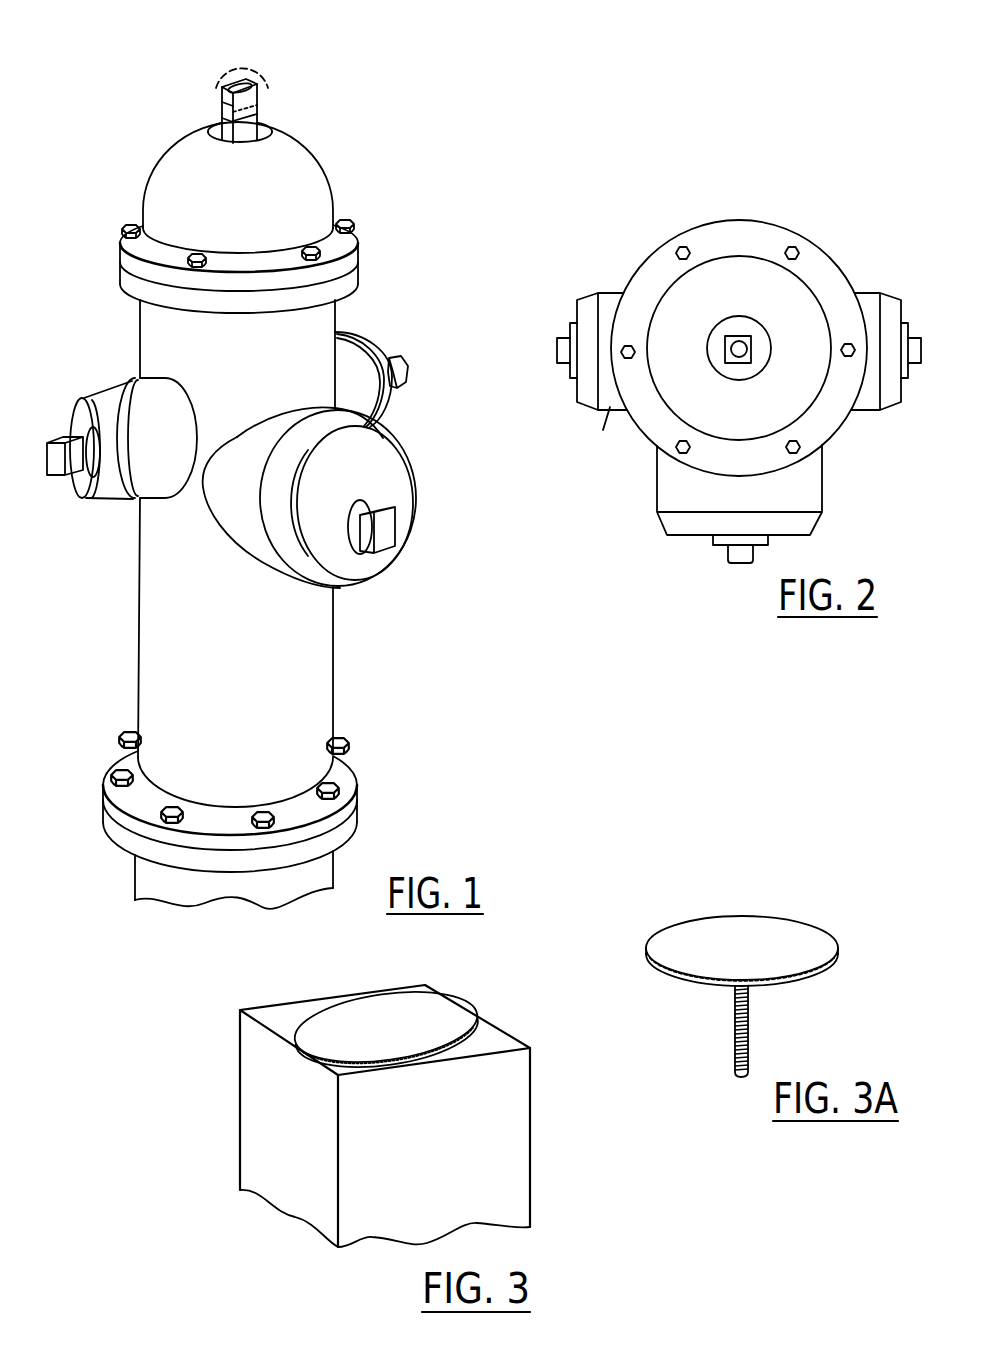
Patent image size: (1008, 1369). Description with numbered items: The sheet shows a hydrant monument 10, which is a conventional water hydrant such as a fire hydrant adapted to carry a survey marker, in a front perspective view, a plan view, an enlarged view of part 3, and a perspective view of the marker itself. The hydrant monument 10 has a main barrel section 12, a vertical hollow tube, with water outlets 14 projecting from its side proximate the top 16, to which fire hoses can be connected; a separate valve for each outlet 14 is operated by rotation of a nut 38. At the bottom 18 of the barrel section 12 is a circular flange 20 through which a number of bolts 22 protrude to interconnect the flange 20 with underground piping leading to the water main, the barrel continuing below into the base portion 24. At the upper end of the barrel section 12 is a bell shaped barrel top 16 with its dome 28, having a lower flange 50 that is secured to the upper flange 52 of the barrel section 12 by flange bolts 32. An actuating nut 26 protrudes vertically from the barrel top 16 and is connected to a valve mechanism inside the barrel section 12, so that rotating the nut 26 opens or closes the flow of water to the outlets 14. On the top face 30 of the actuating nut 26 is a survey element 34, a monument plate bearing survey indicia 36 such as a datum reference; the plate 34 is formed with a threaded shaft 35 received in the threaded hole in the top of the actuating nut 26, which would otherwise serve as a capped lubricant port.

In FIG. 1, the part 3 is at (258, 62).
In FIG. 1, the hydrant monument 10 is at (409, 180).
In FIG. 1, the main barrel section 12 is at (307, 648).
In FIG. 1, the water outlets 14 is at (137, 387).
In FIG. 2, the water outlets 14 is at (663, 470).
In FIG. 1, the barrel top 16 is at (141, 188).
In FIG. 1, the lower barrel section 18 is at (290, 763).
In FIG. 1, the circular flange 20 is at (343, 768).
In FIG. 1, the bolts 22 is at (110, 767).
In FIG. 1, the base standpipe 24 is at (145, 875).
In FIG. 1, the actuating nut 26 is at (222, 119).
In FIG. 2, the actuating nut 26 is at (742, 364).
In FIG. 3, the actuating nut 26 is at (252, 1112).
In FIG. 1, the bonnet dome 28 is at (307, 155).
In FIG. 1, the top face 30 is at (224, 95).
In FIG. 2, the top face 30 is at (722, 340).
In FIG. 3, the top face 30 is at (497, 1038).
In FIG. 1, the flange bolts 32 is at (352, 219).
In FIG. 1, the survey element 34 is at (252, 88).
In FIG. 2, the survey element 34 is at (753, 343).
In FIG. 3, the survey element 34 is at (347, 1012).
In FIG. 3A, the survey element 34 is at (693, 932).
In FIG. 3A, the threaded shaft 35 is at (748, 1050).
In FIG. 3A, the survey indicia 36 is at (773, 927).
In FIG. 1, the nut 38 is at (62, 443).
In FIG. 2, the nut 38 is at (563, 340).
In FIG. 1, the lower flange 50 is at (337, 240).
In FIG. 1, the upper flange 52 is at (347, 283).